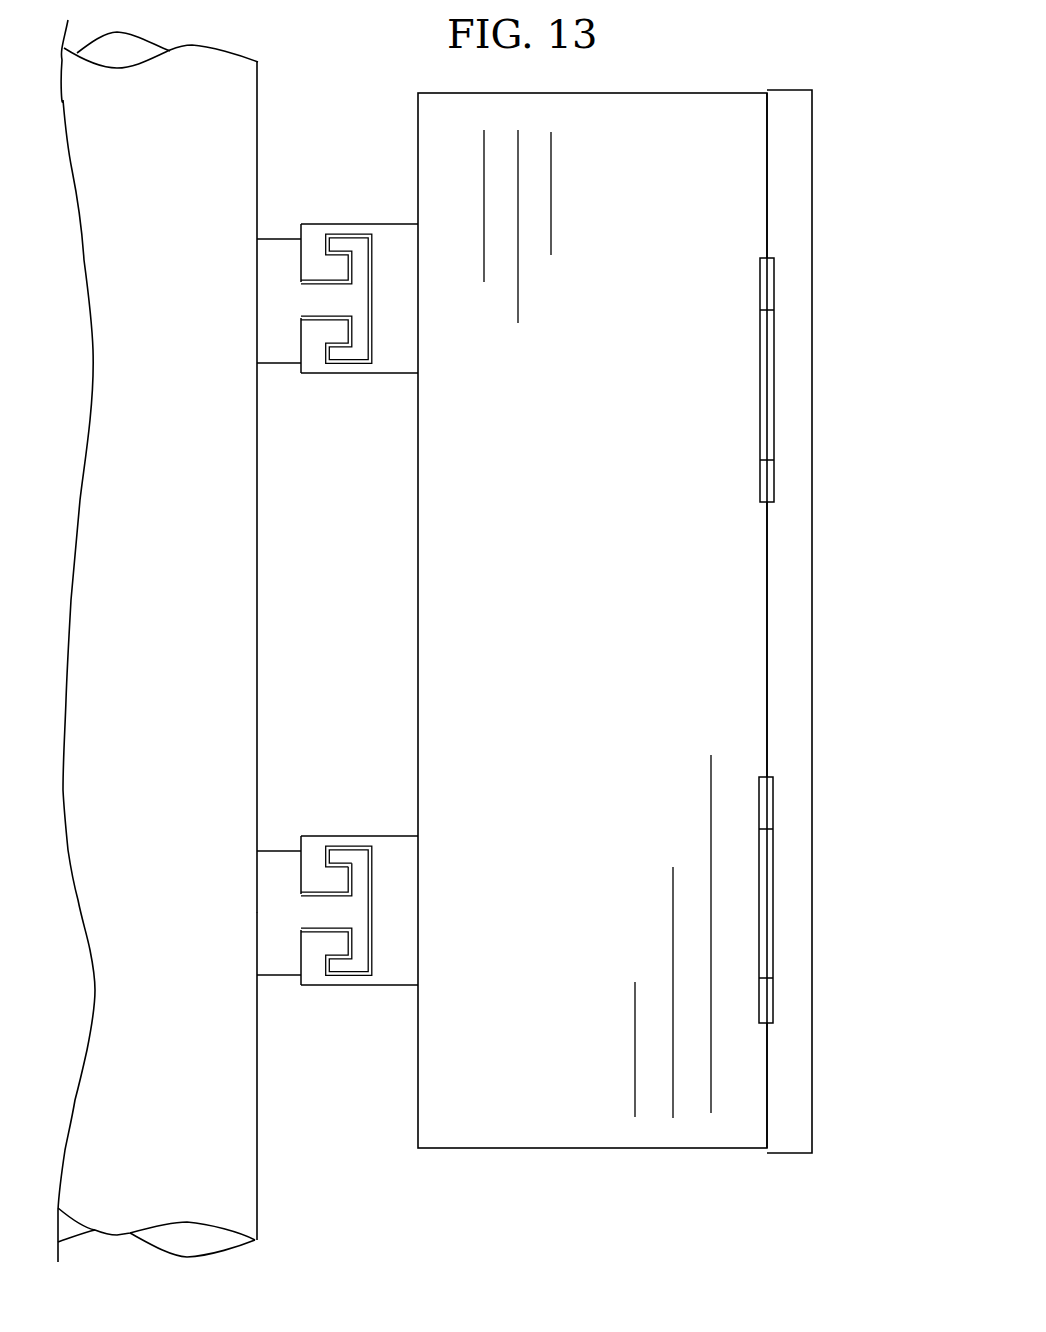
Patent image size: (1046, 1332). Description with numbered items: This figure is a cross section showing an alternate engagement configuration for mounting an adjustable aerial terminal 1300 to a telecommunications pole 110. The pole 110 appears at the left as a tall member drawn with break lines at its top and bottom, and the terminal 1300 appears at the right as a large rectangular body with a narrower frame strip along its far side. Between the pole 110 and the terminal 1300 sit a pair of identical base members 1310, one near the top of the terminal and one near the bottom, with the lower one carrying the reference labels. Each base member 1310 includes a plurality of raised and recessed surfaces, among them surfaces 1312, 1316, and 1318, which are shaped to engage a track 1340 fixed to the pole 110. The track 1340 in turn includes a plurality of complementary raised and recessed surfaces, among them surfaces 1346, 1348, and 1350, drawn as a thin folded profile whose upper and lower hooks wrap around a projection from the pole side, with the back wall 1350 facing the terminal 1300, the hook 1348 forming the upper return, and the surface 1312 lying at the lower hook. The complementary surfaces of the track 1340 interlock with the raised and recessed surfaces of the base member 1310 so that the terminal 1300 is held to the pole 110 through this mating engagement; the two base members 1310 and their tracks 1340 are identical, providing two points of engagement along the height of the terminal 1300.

The telecommunications pole 110 is at (259, 1254).
The adjustable aerial terminal 1300 is at (812, 193).
The base member 1310 is at (337, 990).
The raised and recessed surface 1312 is at (336, 951).
The raised and recessed surface 1316 is at (359, 910).
The raised and recessed surface 1318 is at (359, 865).
The track 1340 is at (279, 913).
The complementary raised and recessed surface 1346 is at (326, 879).
The complementary raised and recessed surface 1348 is at (349, 874).
The complementary raised and recessed surface 1350 is at (370, 927).